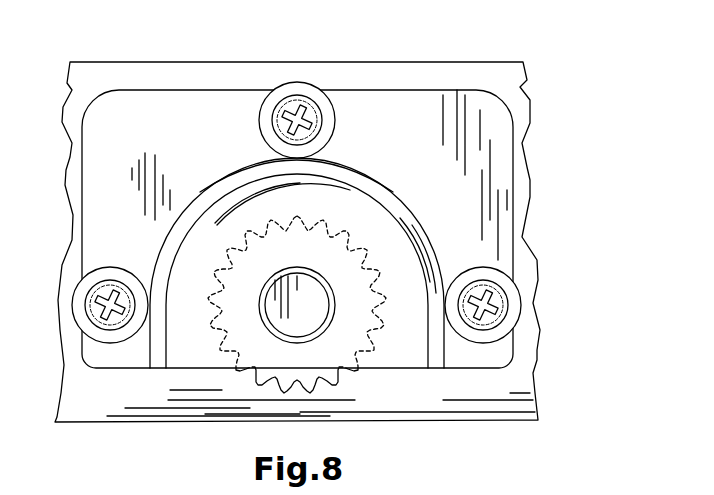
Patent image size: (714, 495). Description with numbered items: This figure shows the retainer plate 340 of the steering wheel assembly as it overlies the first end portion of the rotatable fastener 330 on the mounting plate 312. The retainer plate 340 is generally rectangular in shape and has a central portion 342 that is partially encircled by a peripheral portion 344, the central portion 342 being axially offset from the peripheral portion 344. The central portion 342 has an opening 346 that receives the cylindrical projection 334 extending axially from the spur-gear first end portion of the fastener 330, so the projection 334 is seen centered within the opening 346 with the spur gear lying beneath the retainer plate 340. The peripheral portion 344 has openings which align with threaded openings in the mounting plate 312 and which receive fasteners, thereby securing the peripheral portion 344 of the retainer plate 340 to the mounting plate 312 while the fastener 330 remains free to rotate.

The mounting plate 312 is at (498, 77).
The retainer plate 340 is at (384, 89).
The central portion 342 is at (215, 240).
The peripheral portion 344 is at (492, 205).
The rotatable fastener 330 is at (272, 388).
The cylindrical projection 334 is at (300, 307).
The opening 346 is at (330, 328).